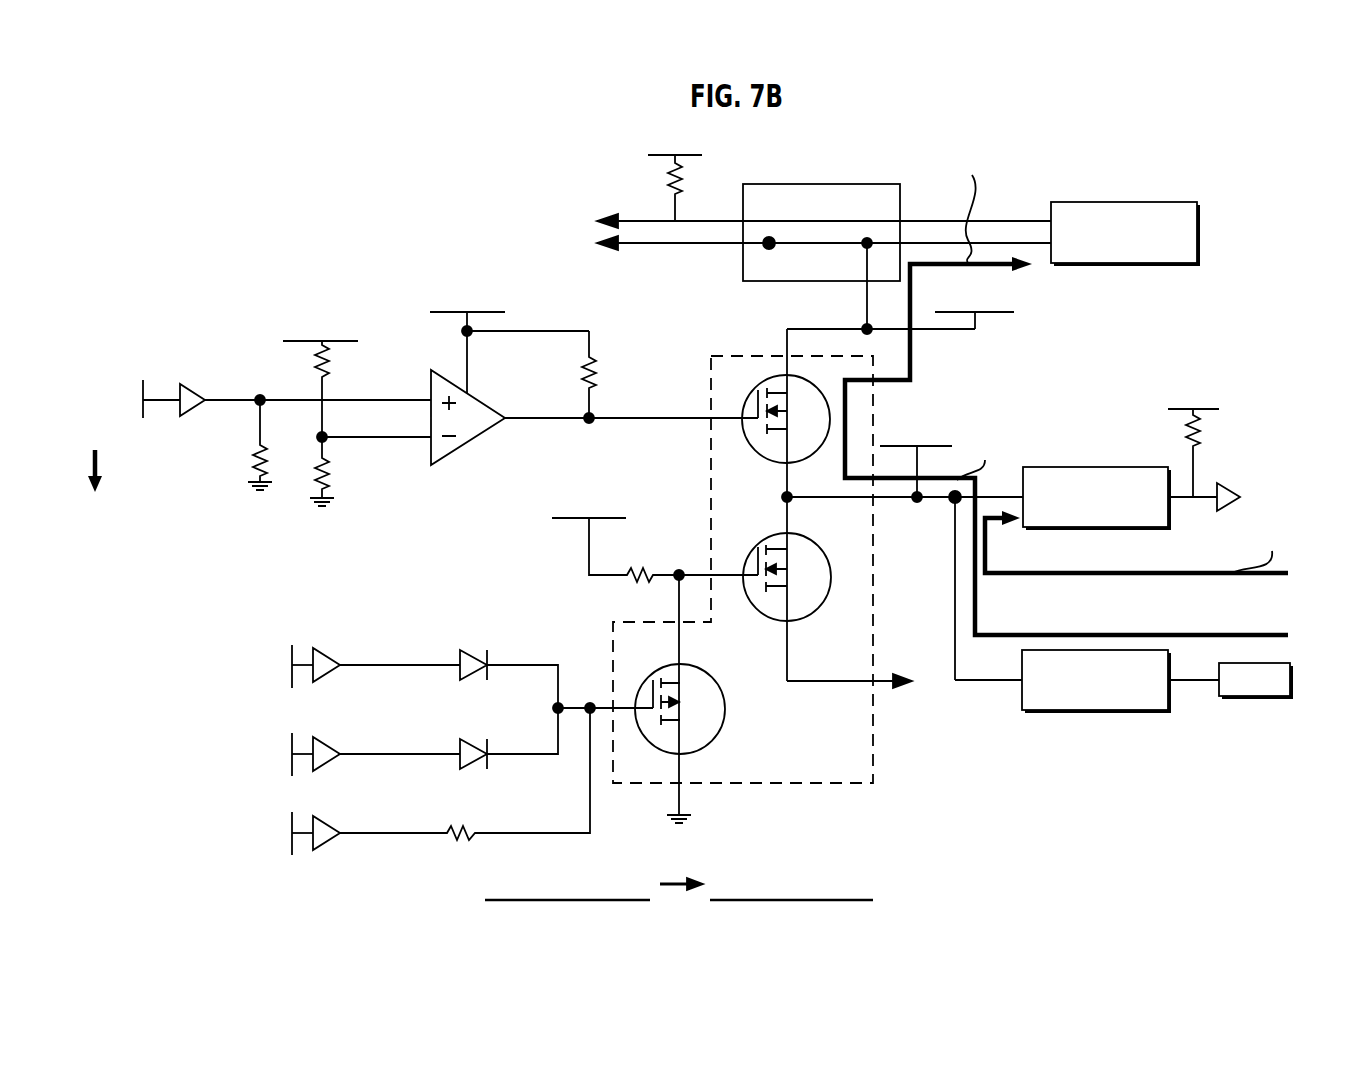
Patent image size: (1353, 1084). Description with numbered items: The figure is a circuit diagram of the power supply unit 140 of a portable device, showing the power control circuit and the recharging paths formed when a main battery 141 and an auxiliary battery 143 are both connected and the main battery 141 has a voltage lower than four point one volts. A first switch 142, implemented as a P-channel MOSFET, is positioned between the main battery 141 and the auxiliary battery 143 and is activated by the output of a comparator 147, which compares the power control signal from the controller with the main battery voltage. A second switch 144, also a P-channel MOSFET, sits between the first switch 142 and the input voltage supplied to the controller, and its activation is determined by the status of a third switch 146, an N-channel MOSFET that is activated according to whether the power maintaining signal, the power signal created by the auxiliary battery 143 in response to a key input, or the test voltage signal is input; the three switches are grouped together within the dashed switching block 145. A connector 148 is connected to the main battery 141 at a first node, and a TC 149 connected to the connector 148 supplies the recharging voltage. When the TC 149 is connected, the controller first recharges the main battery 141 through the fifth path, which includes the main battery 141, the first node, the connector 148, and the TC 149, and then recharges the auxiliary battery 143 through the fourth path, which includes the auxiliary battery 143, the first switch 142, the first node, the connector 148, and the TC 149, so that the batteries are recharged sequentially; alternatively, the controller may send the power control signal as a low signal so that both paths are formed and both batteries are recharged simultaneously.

The power supply unit 140 is at (291, 134).
The main battery 141 is at (1070, 467).
The first switch 142 is at (766, 375).
The auxiliary battery 143 is at (1078, 202).
The second switch 144 is at (768, 535).
The switching unit 145 is at (788, 784).
The third switch 146 is at (656, 675).
The comparator 147 is at (470, 442).
The connector 148 is at (1068, 711).
The TC 149 is at (1238, 697).